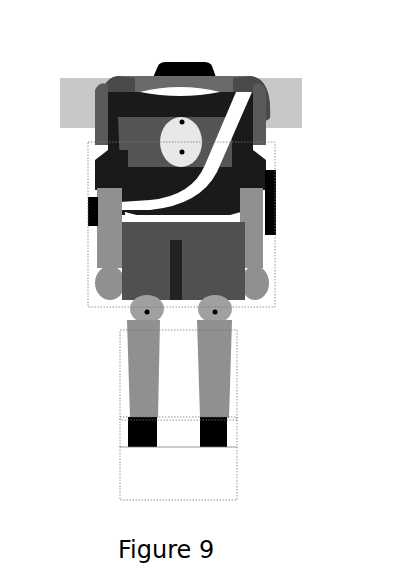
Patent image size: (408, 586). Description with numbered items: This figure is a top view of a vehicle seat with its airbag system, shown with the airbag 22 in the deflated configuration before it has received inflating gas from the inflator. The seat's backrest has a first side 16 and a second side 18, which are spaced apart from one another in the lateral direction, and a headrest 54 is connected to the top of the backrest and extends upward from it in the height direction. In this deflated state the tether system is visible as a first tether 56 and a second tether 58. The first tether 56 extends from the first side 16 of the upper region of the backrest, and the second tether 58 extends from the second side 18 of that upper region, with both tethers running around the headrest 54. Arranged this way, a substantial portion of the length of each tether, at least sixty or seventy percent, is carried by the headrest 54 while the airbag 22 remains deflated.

The first side 16 is at (102, 130).
The second side 18 is at (255, 132).
The airbag 22 is at (260, 63).
The headrest 54 is at (177, 62).
The first tether 56 is at (113, 78).
The second tether 58 is at (222, 78).